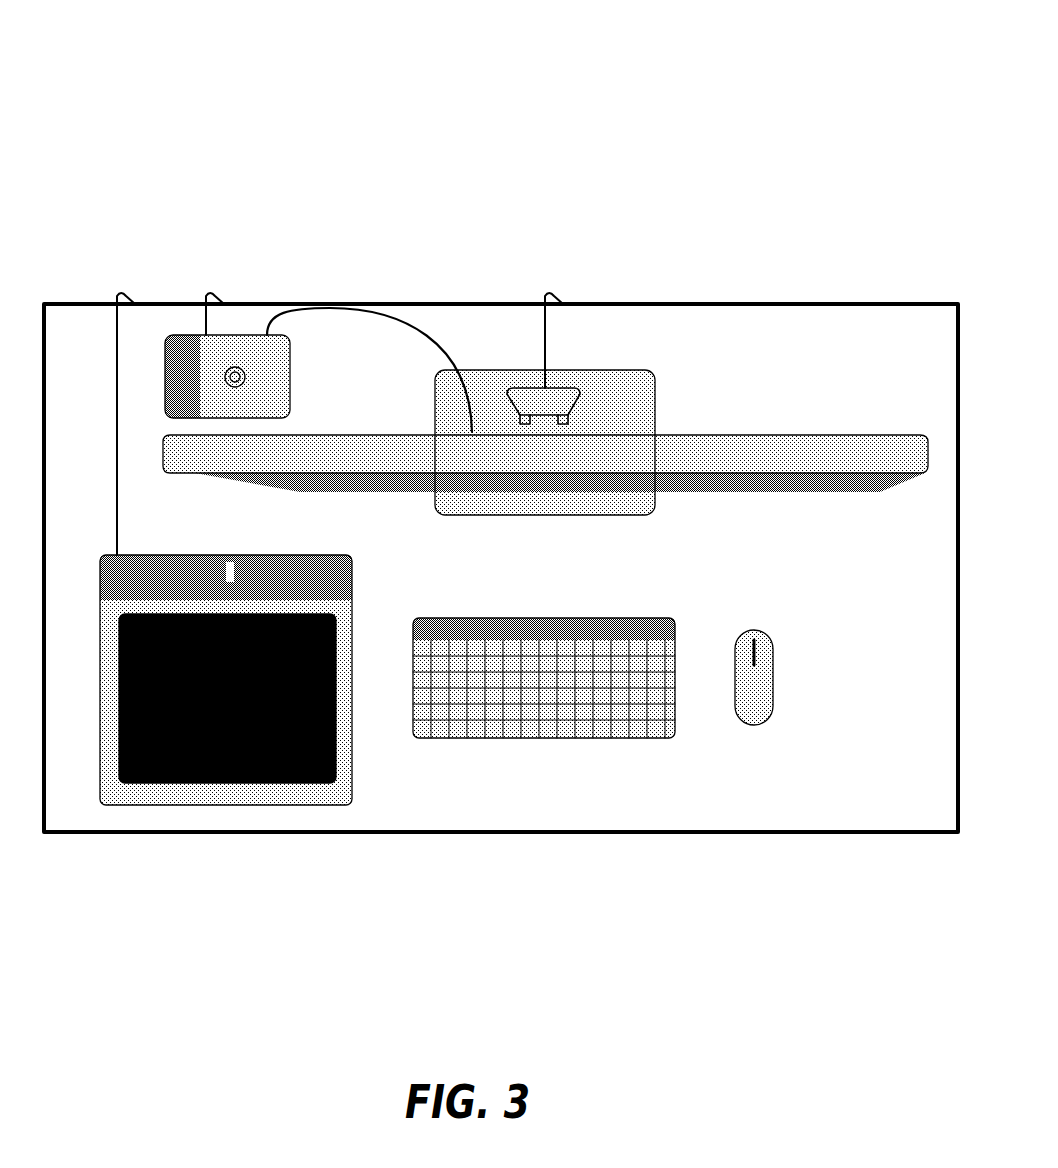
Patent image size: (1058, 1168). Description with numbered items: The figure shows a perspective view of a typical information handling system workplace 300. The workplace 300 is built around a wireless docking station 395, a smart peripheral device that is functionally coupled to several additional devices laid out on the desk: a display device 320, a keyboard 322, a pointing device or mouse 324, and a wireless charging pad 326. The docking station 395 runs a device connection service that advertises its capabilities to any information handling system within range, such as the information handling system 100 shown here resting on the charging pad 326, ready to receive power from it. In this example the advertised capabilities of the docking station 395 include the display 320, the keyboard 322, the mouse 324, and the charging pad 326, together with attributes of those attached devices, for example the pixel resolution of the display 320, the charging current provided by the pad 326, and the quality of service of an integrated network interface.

The information handling system workplace 300 is at (779, 98).
The wireless docking station 395 is at (238, 345).
The display device 320 is at (740, 432).
The wireless charging pad 326 is at (177, 790).
The information handling system 100 is at (230, 783).
The keyboard 322 is at (527, 742).
The pointing device (mouse) 324 is at (739, 730).